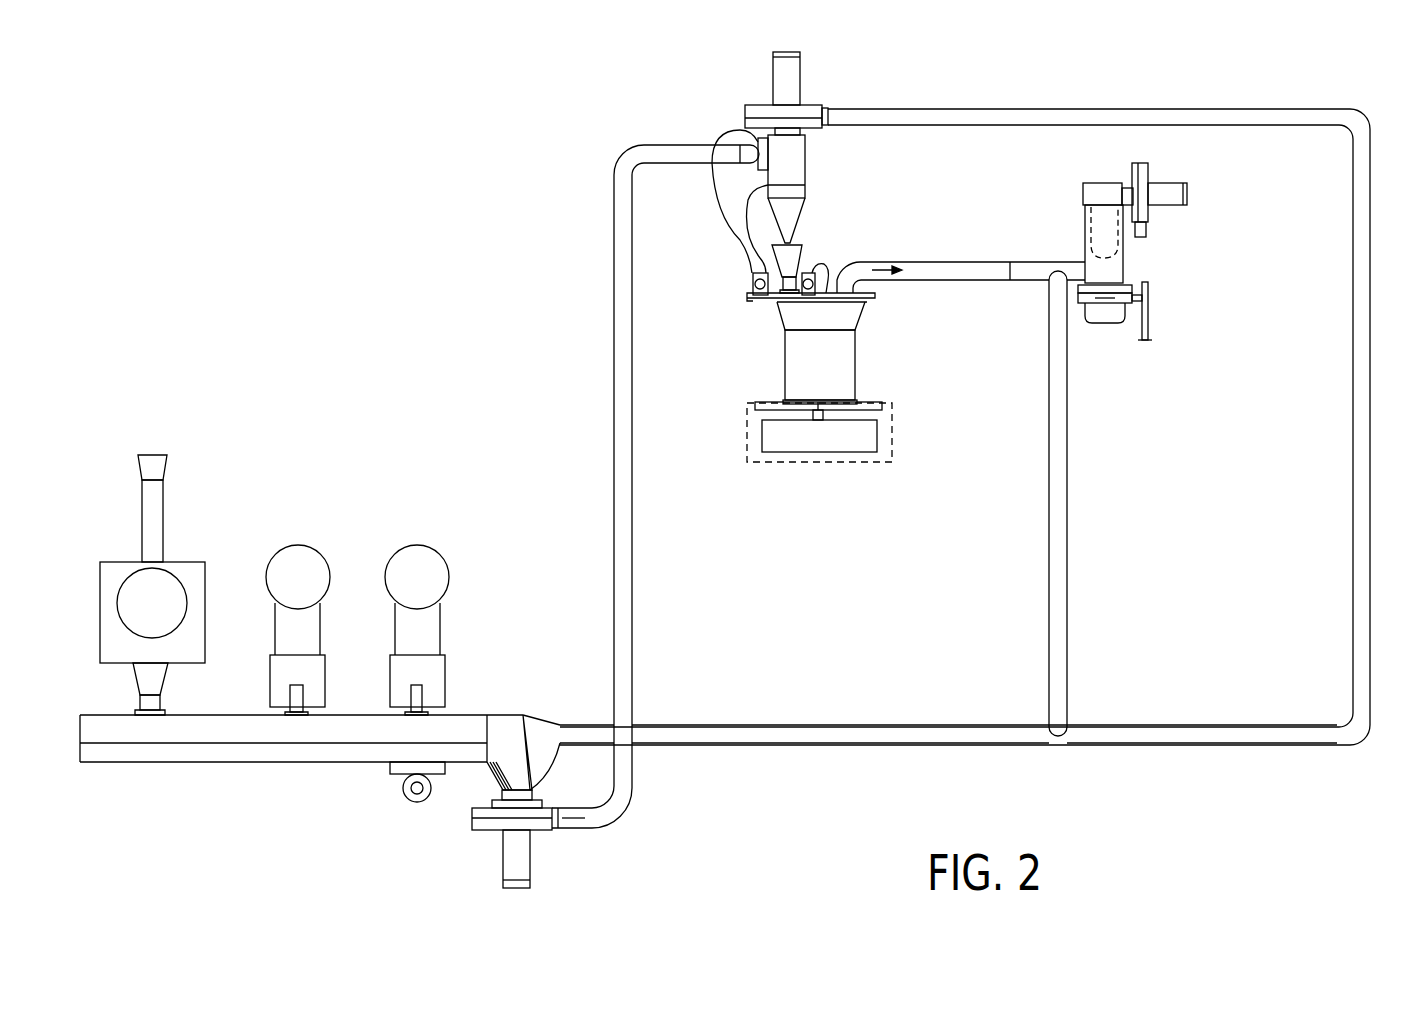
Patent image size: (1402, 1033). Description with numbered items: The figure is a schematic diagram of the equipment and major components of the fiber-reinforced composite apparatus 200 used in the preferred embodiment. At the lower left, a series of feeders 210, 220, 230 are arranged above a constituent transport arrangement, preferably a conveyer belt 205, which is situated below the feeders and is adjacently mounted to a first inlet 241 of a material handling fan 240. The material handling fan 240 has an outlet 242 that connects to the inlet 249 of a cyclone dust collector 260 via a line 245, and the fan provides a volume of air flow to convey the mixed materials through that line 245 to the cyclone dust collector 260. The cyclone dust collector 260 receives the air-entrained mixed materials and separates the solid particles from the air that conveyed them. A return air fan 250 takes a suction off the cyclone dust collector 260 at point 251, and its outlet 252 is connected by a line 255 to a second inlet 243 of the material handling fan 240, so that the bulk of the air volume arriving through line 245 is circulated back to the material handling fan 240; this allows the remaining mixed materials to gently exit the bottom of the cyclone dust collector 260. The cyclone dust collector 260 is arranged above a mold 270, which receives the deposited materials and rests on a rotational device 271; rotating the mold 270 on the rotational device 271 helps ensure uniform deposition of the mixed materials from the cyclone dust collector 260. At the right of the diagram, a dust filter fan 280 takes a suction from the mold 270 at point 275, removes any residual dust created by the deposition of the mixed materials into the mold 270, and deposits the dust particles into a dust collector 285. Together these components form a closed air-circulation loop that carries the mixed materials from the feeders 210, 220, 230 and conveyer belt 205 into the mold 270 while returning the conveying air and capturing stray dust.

The fiber-reinforced composite apparatus 200 is at (283, 190).
The conveyer belt 205 is at (188, 765).
The feeder 210 is at (185, 560).
The feeder 220 is at (320, 613).
The feeder 230 is at (440, 625).
The material handling fan 240 is at (528, 826).
The first inlet 241 is at (487, 716).
The outlet 242 is at (575, 830).
The second inlet 243 is at (560, 724).
The line 245 is at (632, 514).
The inlet 249 is at (722, 131).
The return air fan 250 is at (755, 105).
The suction point 251 is at (805, 133).
The outlet 252 is at (828, 108).
The line 255 is at (1353, 550).
The cyclone dust collector 260 is at (805, 185).
The mold 270 is at (857, 360).
The rotational device 271 is at (747, 430).
The suction point 275 is at (862, 298).
The dust filter fan 280 is at (1137, 163).
The dust collector 285 is at (1140, 237).